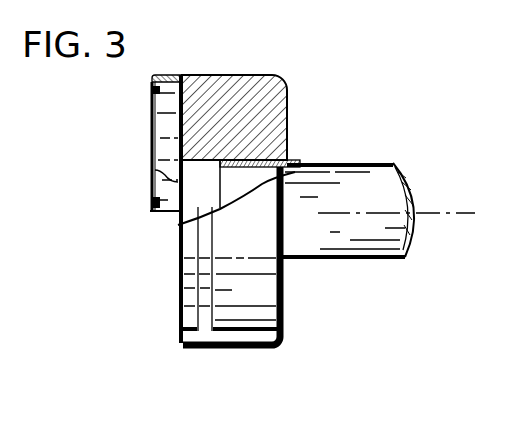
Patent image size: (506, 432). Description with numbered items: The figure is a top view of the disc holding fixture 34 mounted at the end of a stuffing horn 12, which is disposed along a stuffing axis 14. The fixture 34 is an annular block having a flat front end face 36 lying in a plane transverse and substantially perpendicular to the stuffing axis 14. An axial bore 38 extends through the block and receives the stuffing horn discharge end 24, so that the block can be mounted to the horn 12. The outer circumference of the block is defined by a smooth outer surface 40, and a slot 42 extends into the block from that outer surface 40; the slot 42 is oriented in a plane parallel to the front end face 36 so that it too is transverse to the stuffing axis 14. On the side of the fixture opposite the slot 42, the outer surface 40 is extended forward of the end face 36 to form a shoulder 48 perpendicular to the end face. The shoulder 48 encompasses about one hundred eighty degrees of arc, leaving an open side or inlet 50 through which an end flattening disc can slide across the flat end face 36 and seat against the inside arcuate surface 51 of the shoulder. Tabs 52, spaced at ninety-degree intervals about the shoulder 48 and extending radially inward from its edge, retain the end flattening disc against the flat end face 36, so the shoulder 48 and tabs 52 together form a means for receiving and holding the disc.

The stuffing horn 12 is at (351, 164).
The stuffing axis 14 is at (420, 214).
The stuffing horn discharge end 24 is at (293, 239).
The disc holding fixture 34 is at (316, 80).
The flat front end face 36 is at (177, 116).
The axial bore 38 is at (155, 170).
The smooth outer surface 40 is at (236, 210).
The slot 42 is at (206, 333).
The shoulder 48 is at (172, 75).
The open side or inlet 50 is at (170, 199).
The inside arcuate surface 51 is at (165, 136).
The tabs 52 is at (156, 90).